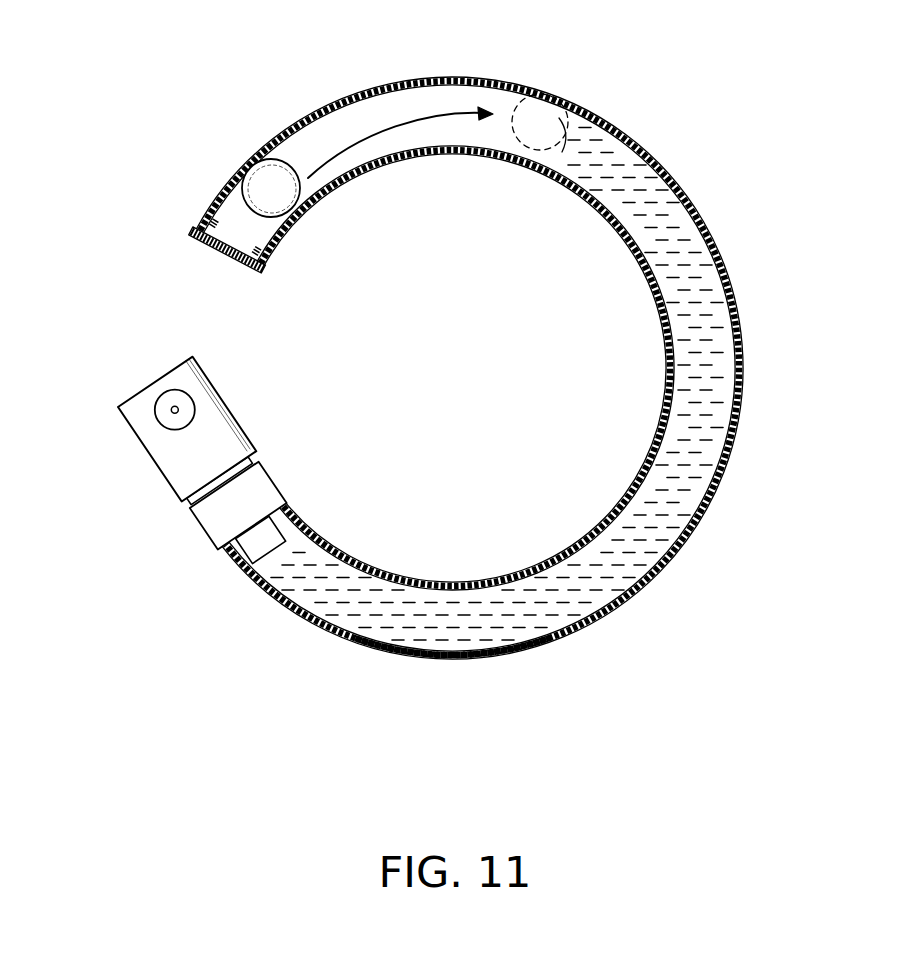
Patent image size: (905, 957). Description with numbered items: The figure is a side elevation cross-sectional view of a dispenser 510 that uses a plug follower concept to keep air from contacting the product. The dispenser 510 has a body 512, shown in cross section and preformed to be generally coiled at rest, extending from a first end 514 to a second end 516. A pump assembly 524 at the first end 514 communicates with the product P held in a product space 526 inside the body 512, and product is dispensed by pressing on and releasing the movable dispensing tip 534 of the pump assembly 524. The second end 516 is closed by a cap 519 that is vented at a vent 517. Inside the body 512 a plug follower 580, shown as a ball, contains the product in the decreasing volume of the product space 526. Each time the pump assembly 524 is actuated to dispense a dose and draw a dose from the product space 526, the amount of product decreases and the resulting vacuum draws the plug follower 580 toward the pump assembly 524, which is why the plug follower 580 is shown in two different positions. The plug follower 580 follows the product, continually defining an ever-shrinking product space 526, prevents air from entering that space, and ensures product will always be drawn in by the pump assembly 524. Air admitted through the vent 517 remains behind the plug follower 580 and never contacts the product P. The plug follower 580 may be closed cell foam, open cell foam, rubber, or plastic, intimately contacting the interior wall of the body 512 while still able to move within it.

The dispenser 510 is at (172, 140).
The body 512 is at (757, 347).
The first end 514 is at (222, 547).
The second end 516 is at (263, 262).
The vent 517 is at (226, 252).
The cap 519 is at (195, 230).
The pump assembly 524 is at (134, 464).
The product space 526 is at (481, 642).
The movable dispensing tip 534 is at (210, 373).
The plug follower 580 is at (262, 183).
The product P is at (700, 414).